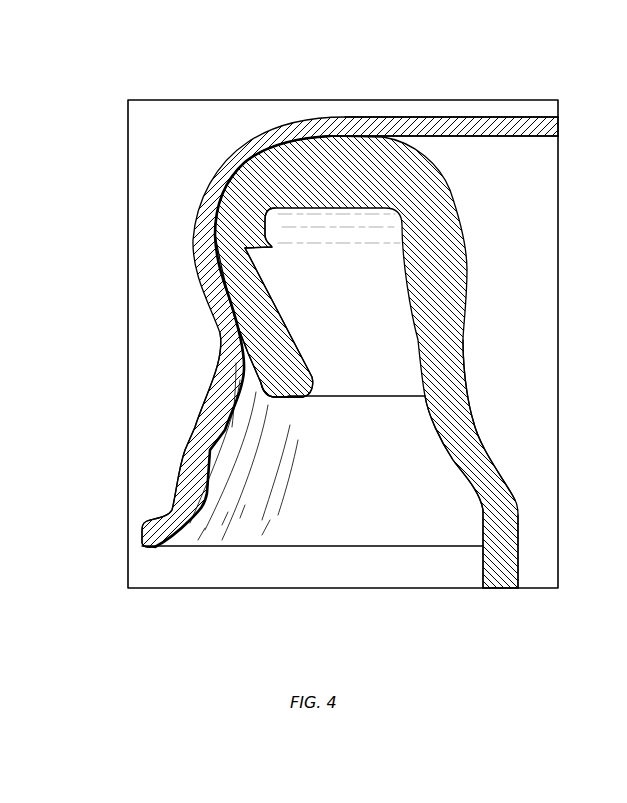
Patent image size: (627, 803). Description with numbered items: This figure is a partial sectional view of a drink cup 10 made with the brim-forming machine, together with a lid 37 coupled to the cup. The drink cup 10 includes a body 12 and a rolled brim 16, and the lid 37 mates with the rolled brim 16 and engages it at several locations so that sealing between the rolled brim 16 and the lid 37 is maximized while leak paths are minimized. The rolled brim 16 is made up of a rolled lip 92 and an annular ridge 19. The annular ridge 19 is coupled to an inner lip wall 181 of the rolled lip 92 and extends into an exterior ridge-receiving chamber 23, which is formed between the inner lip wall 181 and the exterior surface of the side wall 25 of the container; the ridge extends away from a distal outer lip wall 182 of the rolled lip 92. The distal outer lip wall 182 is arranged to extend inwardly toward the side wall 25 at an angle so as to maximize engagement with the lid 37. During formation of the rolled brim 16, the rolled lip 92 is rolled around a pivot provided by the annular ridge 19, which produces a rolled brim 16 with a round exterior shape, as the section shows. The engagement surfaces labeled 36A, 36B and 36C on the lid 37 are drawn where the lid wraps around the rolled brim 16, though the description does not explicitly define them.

The drink cup 10 is at (481, 513).
The body 12 is at (505, 570).
The rolled brim 16 is at (276, 412).
The annular ridge 19 is at (268, 250).
The exterior ridge-receiving chamber 23 is at (338, 380).
The side wall 25 is at (482, 482).
The inner lip 36A is at (240, 323).
The outer shell arc 36B is at (212, 240).
The top band 36C is at (358, 133).
The lid 37 is at (195, 423).
The rolled lip 92 is at (290, 302).
The inner lip wall 181 is at (313, 152).
The distal outer lip wall 182 is at (285, 375).